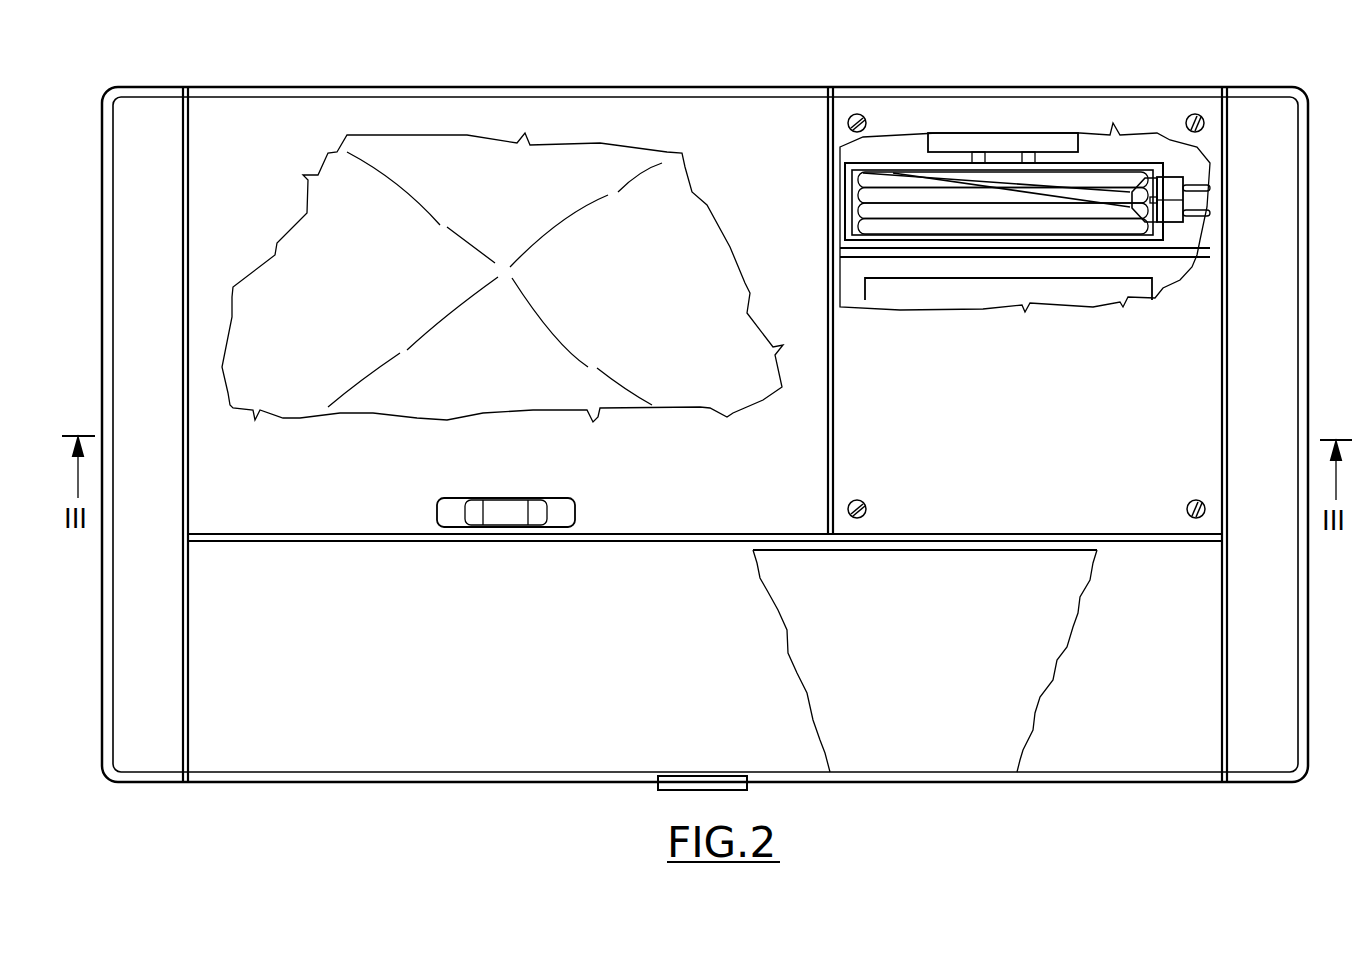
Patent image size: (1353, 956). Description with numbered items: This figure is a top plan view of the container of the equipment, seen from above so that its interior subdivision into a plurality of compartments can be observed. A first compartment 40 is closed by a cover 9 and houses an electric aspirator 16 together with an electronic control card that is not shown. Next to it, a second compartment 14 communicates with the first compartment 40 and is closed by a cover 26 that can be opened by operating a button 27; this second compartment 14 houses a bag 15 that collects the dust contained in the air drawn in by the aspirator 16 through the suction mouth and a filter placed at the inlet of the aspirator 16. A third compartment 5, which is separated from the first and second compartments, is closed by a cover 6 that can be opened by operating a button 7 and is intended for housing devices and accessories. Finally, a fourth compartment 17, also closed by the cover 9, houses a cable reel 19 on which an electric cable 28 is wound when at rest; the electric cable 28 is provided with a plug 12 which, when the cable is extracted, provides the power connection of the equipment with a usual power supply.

The third compartment 5 is at (943, 657).
The cover 6 is at (450, 750).
The button 7 is at (672, 780).
The cover 9 is at (1066, 479).
The plug 12 is at (1170, 215).
The second compartment 14 is at (752, 477).
The bag 15 is at (473, 190).
The electric aspirator 16 is at (923, 292).
The fourth compartment 17 is at (1136, 162).
The cable reel 19 is at (903, 163).
The cover 26 is at (262, 508).
The button 27 is at (513, 508).
The electric cable 28 is at (990, 182).
The first compartment 40 is at (1112, 267).